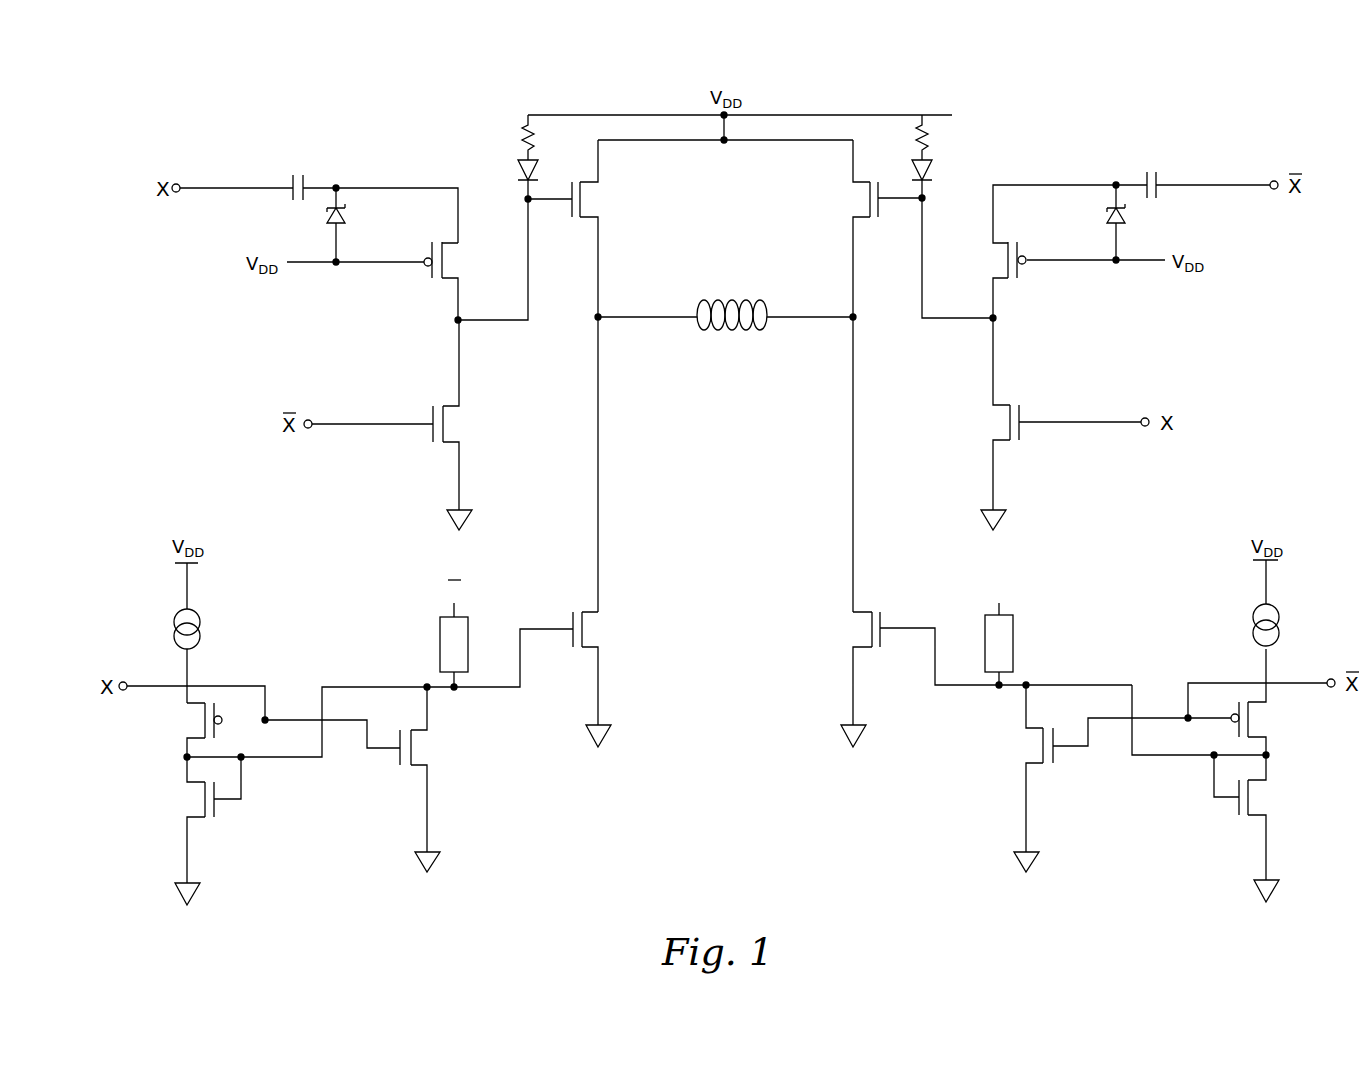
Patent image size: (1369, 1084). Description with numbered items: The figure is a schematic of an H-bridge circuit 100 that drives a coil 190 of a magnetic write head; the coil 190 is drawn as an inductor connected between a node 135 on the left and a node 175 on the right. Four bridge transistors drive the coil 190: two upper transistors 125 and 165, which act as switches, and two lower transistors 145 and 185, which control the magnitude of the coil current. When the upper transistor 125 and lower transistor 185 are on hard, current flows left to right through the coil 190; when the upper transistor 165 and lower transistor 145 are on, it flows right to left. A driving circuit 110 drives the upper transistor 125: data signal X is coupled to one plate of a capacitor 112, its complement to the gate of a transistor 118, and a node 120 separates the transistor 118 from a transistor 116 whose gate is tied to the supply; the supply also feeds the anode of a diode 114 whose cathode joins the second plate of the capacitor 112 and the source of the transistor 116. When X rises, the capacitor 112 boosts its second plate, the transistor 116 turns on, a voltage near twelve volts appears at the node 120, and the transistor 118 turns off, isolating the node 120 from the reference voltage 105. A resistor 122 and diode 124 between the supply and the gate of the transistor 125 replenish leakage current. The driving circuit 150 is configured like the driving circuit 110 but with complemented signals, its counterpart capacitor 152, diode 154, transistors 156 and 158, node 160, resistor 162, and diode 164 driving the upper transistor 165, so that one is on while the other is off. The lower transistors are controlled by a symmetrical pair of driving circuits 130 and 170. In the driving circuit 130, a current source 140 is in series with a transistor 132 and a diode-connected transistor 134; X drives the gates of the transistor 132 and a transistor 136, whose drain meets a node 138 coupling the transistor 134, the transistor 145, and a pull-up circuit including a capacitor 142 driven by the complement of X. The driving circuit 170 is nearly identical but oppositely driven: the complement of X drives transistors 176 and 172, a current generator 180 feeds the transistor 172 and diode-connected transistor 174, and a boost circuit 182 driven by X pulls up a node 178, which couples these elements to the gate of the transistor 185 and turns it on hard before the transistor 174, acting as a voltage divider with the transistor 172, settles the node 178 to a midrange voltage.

The bridge circuit 100 is at (880, 900).
The reference voltage 105 is at (474, 514).
The driving circuit 110 is at (215, 318).
The capacitor 112 is at (300, 172).
The diode 114 is at (345, 214).
The transistor 116 is at (452, 244).
The transistor 118 is at (443, 406).
The node 120 is at (461, 323).
The resistor 122 is at (525, 138).
The diode 124 is at (518, 168).
The upper transistor 125 is at (598, 185).
The driving circuit 130 is at (395, 608).
The transistor 132 is at (197, 733).
The diode-connected transistor 134 is at (197, 815).
The node 135 is at (596, 320).
The transistor 136 is at (430, 731).
The node 138 is at (425, 684).
The current source 140 is at (200, 622).
The capacitor 142 is at (468, 637).
The lower transistor 145 is at (600, 612).
The driving circuit 150 is at (1242, 316).
The capacitor 152 is at (1152, 172).
The zener diode 154 is at (1107, 214).
The PMOS transistor 156 is at (998, 244).
The NMOS transistor 158 is at (1010, 405).
The node 160 is at (990, 322).
The resistor 162 is at (930, 136).
The diode 164 is at (935, 170).
The upper transistor 165 is at (858, 187).
The driving circuit 170 is at (1345, 608).
The transistor 172 is at (1264, 735).
The diode-connected transistor 174 is at (1266, 815).
The node 175 is at (856, 320).
The transistor 176 is at (1026, 732).
The node 178 is at (1028, 683).
The current generator 180 is at (1253, 622).
The boost circuit 182 is at (985, 633).
The lower transistor 185 is at (851, 612).
The coil 190 is at (742, 302).